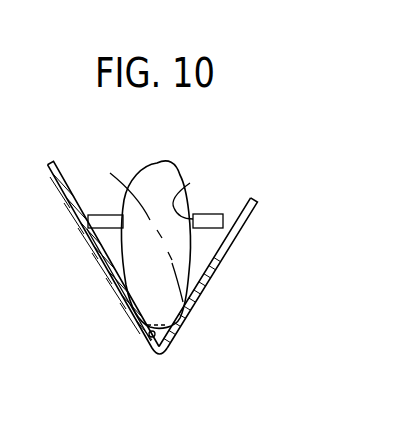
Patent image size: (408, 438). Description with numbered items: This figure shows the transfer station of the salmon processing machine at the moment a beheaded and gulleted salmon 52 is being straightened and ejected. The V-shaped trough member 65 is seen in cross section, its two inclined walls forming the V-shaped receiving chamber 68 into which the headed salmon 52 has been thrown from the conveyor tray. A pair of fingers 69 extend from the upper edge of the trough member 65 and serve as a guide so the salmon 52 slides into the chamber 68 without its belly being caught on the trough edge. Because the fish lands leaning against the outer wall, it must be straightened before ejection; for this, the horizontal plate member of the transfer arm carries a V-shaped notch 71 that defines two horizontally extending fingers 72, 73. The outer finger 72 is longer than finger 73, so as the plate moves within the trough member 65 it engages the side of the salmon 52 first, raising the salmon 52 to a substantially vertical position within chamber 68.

The headed salmon 52 is at (172, 165).
The V-shaped trough member 65 is at (100, 262).
The V-shaped receiving chamber 68 is at (149, 334).
The fingers 69 is at (247, 218).
The V-shaped notch 71 is at (190, 195).
The outer finger 72 is at (100, 214).
The finger 73 is at (219, 214).